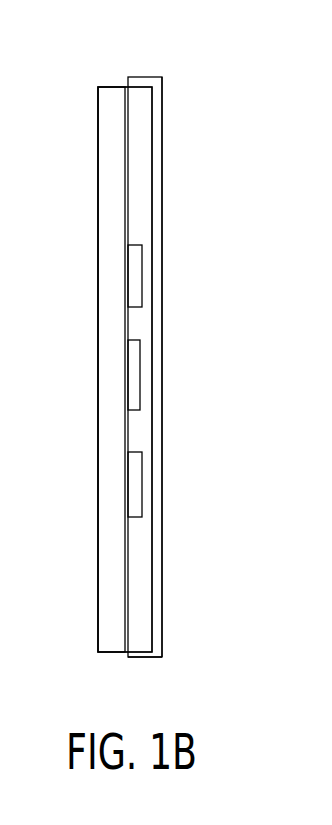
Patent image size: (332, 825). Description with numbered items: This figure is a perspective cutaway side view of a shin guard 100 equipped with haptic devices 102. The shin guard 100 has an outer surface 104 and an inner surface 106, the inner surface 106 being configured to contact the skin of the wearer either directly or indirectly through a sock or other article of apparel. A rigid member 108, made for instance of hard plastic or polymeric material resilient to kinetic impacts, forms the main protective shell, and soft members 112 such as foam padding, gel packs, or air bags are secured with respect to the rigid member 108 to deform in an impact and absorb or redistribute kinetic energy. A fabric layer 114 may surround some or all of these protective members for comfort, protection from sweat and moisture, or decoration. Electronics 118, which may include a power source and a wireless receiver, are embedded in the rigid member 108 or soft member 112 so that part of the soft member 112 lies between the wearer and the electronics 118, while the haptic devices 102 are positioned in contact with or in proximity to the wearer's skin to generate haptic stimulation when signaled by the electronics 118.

The shin guard 100 is at (110, 87).
The haptic devices 102 is at (128, 265).
The outer surface 104 is at (98, 507).
The inner surface 106 is at (163, 268).
The rigid member 108 is at (103, 188).
The soft members 112 is at (140, 656).
The fabric layer 114 is at (163, 593).
The electronics 118 is at (137, 357).